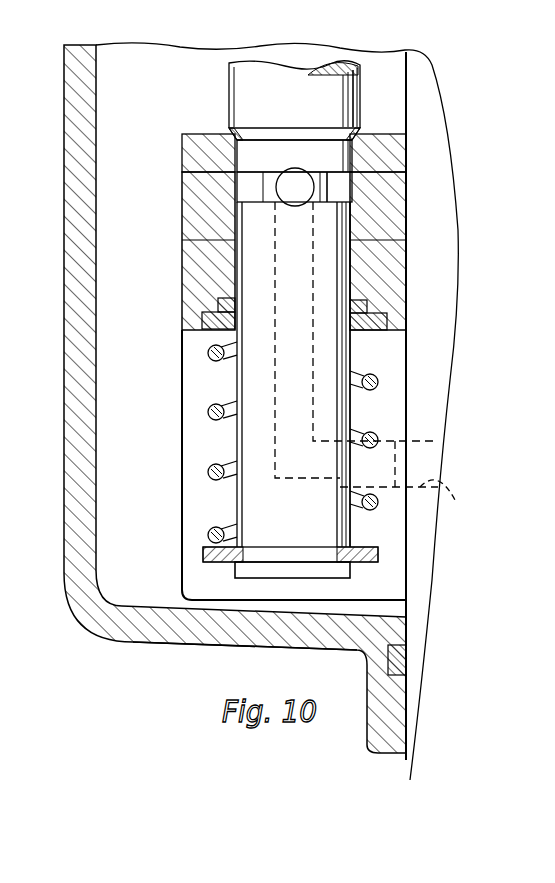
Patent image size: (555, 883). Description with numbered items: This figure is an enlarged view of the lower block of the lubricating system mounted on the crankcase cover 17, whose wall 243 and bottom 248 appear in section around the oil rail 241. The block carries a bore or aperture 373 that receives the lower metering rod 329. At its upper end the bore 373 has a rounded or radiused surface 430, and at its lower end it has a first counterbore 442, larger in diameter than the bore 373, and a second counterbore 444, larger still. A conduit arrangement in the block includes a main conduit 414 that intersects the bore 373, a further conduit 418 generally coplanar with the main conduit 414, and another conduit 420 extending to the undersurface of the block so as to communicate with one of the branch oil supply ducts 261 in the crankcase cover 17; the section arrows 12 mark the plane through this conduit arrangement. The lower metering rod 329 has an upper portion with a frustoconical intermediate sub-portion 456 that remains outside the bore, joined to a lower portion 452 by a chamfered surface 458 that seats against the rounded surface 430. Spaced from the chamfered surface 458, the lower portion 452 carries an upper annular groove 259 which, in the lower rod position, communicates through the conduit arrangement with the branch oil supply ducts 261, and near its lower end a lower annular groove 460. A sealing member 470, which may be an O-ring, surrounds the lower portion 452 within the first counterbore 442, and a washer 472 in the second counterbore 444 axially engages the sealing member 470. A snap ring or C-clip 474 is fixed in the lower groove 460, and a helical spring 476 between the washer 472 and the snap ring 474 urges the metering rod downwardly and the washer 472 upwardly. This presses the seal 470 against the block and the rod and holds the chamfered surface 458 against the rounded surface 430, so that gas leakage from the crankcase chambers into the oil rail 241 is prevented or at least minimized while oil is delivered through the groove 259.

The section line 12 is at (292, 5).
The crankcase cover 17 is at (420, 82).
The oil rail 241 is at (128, 365).
The housing side wall 243 is at (77, 418).
The housing bottom wall 248 is at (173, 633).
The upper annular groove 259 is at (255, 183).
The branch oil supply ducts 261 is at (406, 477).
The lower metering rod 329 is at (245, 72).
The bore or aperture 373 is at (250, 230).
The main conduit 414 is at (300, 170).
The conduit 418 is at (275, 358).
The conduit 420 is at (390, 440).
The rounded or radiused surface 430 is at (215, 135).
The first counterbore 442 is at (367, 303).
The second counterbore 444 is at (387, 322).
The lower portion 452 is at (262, 522).
The intermediate sub-portion 456 is at (322, 88).
The chamfered surface 458 is at (260, 127).
The lower annular groove 460 is at (340, 547).
The sealing member 470 is at (352, 300).
The washer 472 is at (200, 328).
The snap ring or C-clip 474 is at (355, 566).
The spring 476 is at (208, 413).